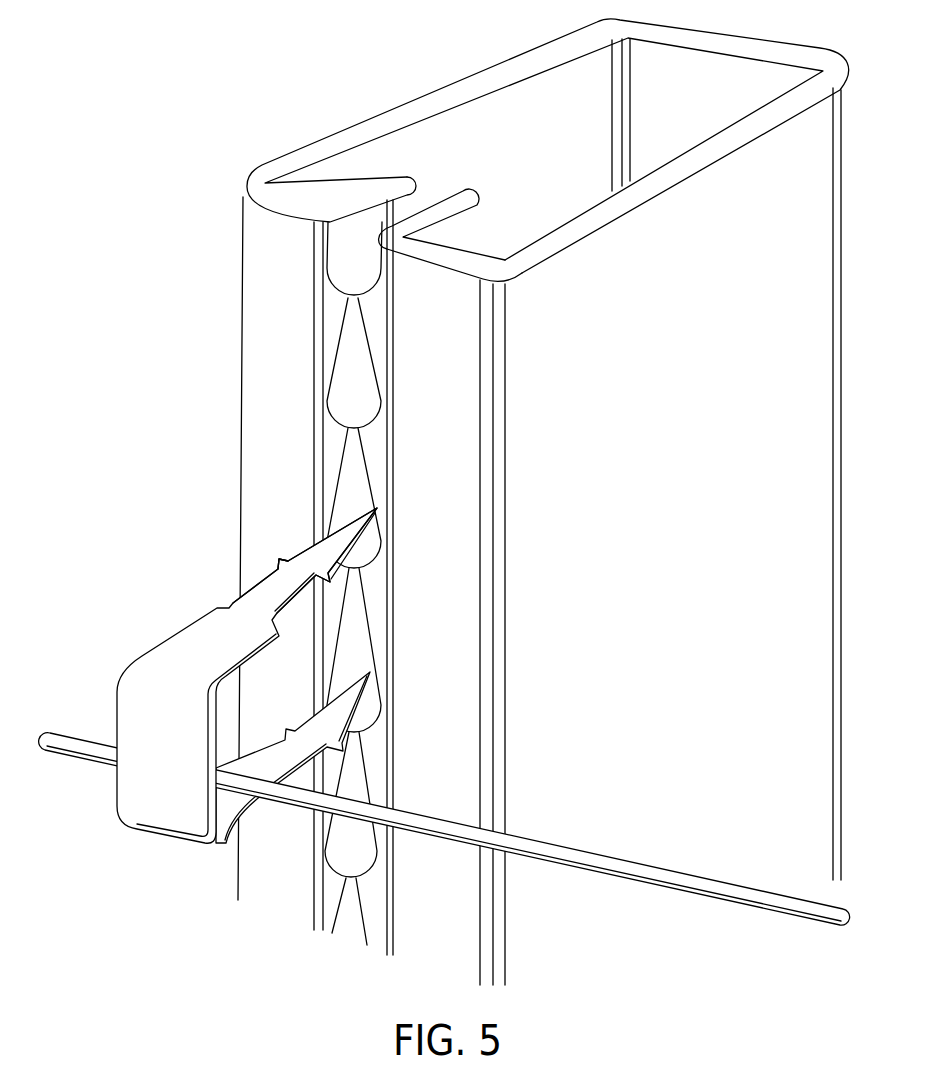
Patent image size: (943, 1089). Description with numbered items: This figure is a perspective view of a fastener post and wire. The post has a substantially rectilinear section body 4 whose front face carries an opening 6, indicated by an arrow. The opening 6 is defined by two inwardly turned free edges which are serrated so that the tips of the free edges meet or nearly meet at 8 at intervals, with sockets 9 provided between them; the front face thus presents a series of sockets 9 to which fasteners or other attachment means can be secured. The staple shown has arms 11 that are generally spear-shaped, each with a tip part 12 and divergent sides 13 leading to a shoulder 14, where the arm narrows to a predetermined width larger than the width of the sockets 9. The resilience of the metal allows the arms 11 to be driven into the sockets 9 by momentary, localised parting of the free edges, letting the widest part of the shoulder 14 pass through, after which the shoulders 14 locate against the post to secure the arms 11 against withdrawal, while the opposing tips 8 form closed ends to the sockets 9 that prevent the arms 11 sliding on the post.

The body 4 is at (818, 208).
The opening 6 is at (446, 175).
The tips of the free edges 8 is at (343, 430).
The sockets 9 is at (333, 388).
The arms 11 is at (138, 642).
The tip part 12 is at (377, 510).
The divergent sides 13 is at (283, 562).
The shoulder 14 is at (280, 562).